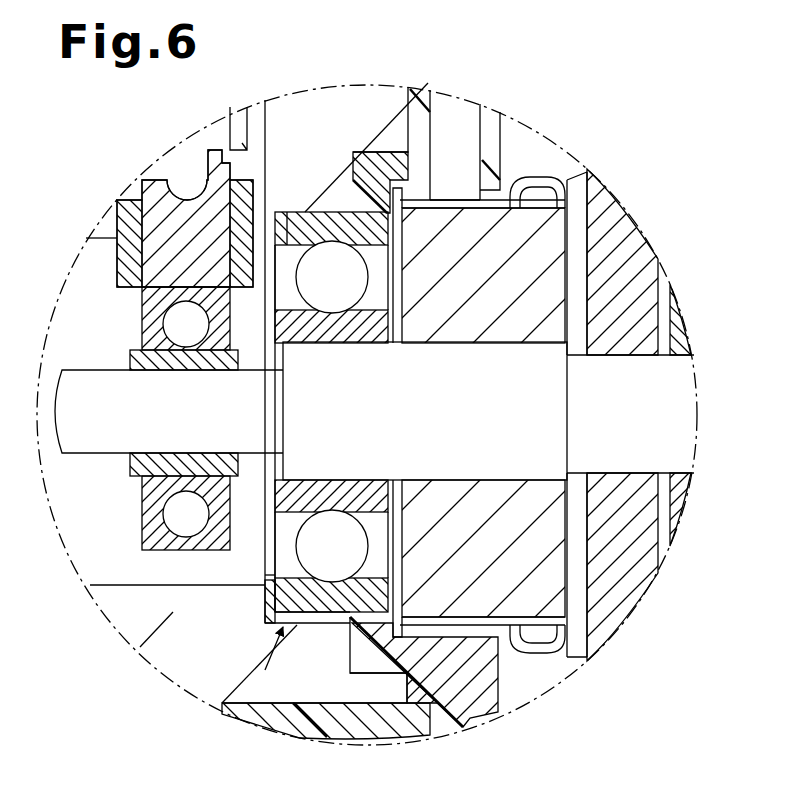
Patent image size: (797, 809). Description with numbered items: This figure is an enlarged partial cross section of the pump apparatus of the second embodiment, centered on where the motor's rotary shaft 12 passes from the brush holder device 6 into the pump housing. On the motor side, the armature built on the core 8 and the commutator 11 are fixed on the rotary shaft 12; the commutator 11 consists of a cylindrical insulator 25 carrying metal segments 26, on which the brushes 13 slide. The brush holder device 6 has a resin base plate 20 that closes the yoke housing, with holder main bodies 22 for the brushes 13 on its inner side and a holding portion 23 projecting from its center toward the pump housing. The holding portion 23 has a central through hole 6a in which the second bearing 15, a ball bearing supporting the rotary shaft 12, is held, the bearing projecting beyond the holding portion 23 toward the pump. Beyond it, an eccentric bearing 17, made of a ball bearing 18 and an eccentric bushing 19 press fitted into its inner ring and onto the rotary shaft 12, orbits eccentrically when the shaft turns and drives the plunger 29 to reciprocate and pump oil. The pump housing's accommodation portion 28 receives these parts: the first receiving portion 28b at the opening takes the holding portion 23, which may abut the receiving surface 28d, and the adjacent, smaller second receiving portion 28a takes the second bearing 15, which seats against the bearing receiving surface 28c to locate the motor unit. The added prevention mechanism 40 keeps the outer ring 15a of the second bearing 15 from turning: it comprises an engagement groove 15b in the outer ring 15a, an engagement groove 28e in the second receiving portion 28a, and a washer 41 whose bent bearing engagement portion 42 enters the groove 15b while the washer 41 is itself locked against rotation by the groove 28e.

The brush holder device 6 is at (397, 78).
The through hole 6a is at (352, 665).
The core 8 is at (333, 86).
The commutator 11 is at (550, 398).
The rotary shaft 12 is at (690, 379).
The brushes 13 is at (487, 122).
The second bearing 15 is at (265, 496).
The outer ring 15a is at (328, 212).
The engagement groove 15b is at (283, 241).
The eccentric bearing 17 is at (145, 418).
The ball bearing 18 is at (132, 473).
The eccentric bushing 19 is at (140, 541).
The base plate 20 is at (407, 120).
The holder main bodies 22 is at (504, 132).
The holding portion 23 is at (372, 143).
The insulator 25 is at (585, 202).
The segments 26 is at (578, 167).
The accommodation portion 28 is at (94, 584).
The second receiving portion 28a is at (267, 612).
The first receiving portion 28b is at (373, 669).
The bearing receiving surface 28c is at (268, 584).
The receiving surface 28d is at (372, 669).
The engagement groove 28e is at (275, 636).
The plunger 29 is at (148, 215).
The prevention mechanism 40 is at (326, 682).
The washer 41 is at (267, 596).
The bearing engagement portion 42 is at (288, 237).